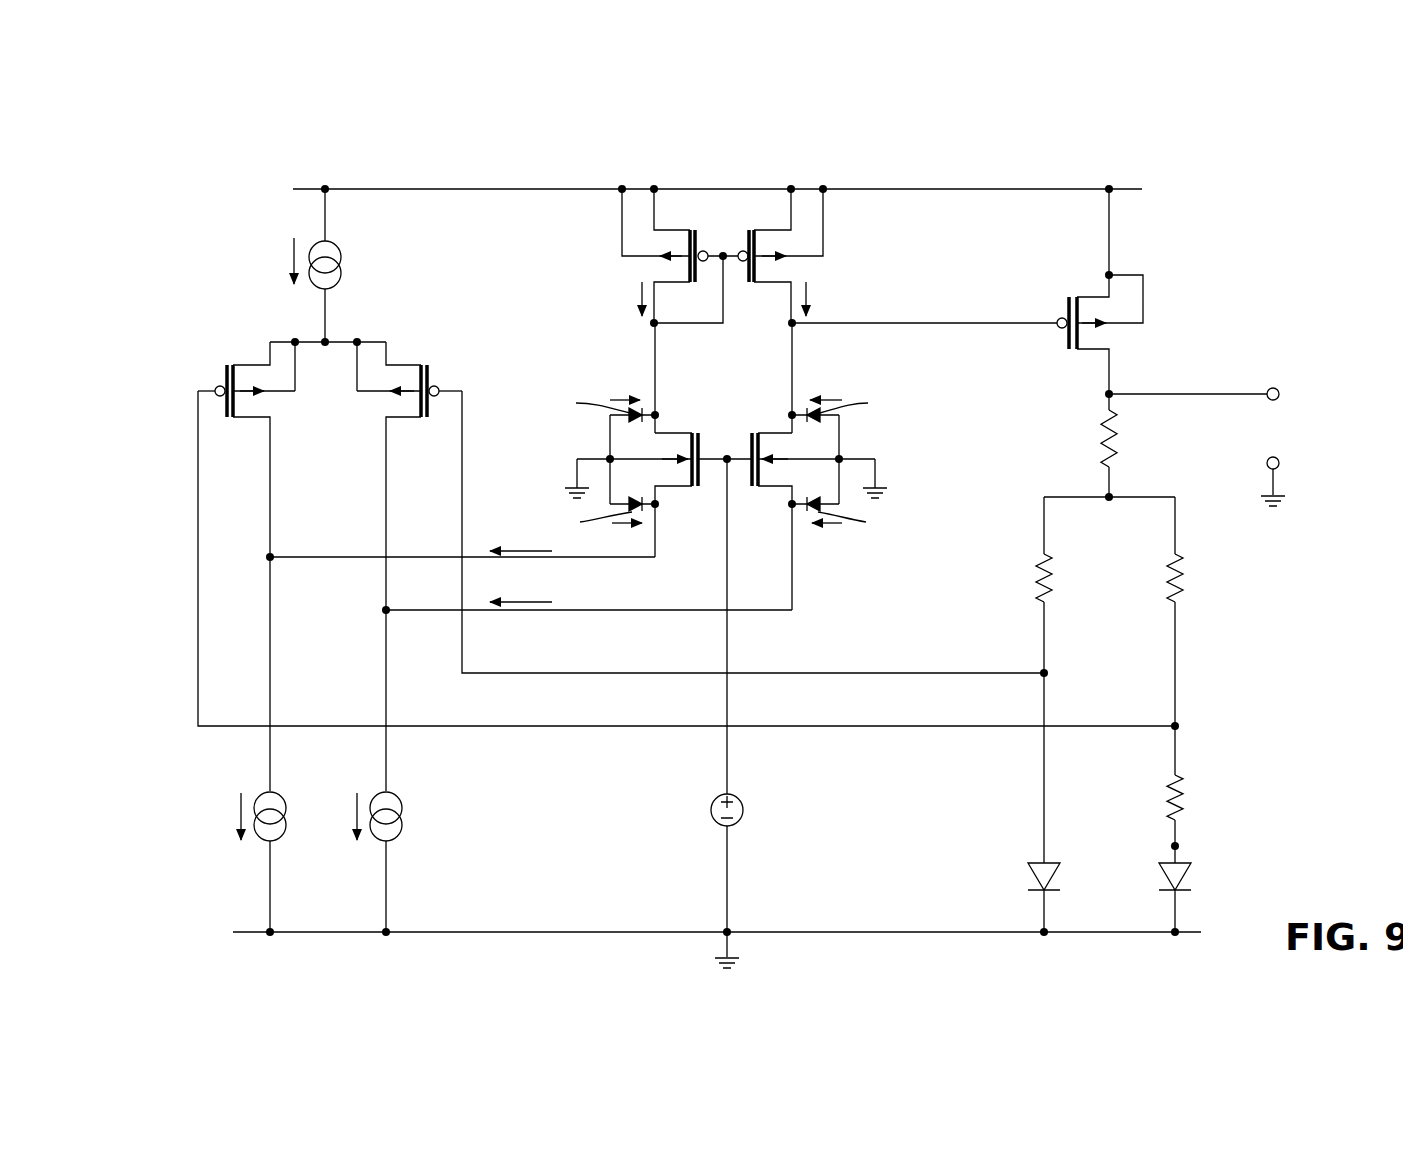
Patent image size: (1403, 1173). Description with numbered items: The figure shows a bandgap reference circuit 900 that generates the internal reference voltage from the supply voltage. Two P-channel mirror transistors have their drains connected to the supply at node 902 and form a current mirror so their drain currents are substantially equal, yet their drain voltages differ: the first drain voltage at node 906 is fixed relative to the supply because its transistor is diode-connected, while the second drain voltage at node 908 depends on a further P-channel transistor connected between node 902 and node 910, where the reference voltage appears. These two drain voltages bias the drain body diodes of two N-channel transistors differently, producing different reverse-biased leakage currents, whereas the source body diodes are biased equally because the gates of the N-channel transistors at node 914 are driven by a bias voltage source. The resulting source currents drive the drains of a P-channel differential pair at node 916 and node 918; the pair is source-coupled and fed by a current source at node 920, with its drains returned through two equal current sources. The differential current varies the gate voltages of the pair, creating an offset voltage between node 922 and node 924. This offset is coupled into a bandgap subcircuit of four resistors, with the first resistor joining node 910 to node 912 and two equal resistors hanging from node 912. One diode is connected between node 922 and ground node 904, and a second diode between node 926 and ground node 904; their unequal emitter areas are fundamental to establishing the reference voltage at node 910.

The bandgap reference circuit 900 is at (974, 162).
The node 902 is at (823, 189).
The ground node 904 is at (727, 932).
The node 906 is at (723, 256).
The node 908 is at (792, 323).
The node 910 is at (1109, 394).
The node 912 is at (1109, 497).
The node 914 is at (727, 459).
The node 916 is at (270, 557).
The node 918 is at (386, 610).
The node 920 is at (325, 342).
The node 922 is at (1044, 673).
The node 924 is at (1175, 726).
The node 926 is at (1175, 846).